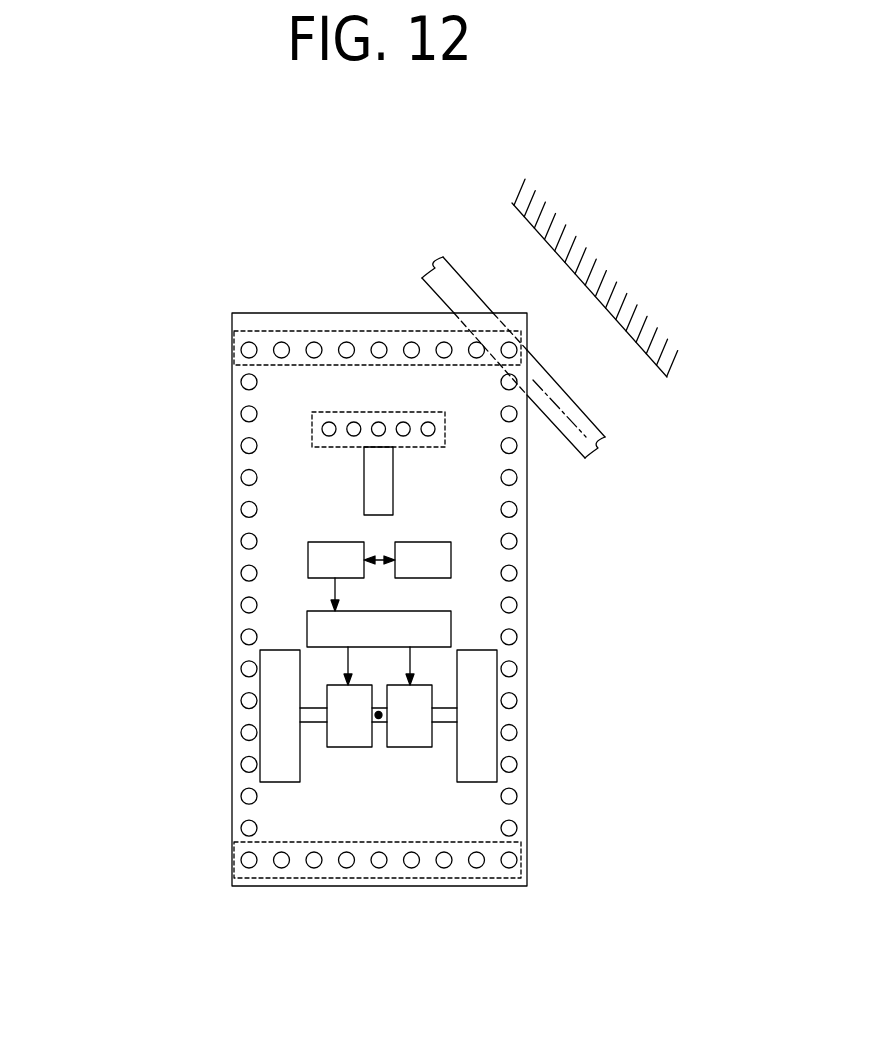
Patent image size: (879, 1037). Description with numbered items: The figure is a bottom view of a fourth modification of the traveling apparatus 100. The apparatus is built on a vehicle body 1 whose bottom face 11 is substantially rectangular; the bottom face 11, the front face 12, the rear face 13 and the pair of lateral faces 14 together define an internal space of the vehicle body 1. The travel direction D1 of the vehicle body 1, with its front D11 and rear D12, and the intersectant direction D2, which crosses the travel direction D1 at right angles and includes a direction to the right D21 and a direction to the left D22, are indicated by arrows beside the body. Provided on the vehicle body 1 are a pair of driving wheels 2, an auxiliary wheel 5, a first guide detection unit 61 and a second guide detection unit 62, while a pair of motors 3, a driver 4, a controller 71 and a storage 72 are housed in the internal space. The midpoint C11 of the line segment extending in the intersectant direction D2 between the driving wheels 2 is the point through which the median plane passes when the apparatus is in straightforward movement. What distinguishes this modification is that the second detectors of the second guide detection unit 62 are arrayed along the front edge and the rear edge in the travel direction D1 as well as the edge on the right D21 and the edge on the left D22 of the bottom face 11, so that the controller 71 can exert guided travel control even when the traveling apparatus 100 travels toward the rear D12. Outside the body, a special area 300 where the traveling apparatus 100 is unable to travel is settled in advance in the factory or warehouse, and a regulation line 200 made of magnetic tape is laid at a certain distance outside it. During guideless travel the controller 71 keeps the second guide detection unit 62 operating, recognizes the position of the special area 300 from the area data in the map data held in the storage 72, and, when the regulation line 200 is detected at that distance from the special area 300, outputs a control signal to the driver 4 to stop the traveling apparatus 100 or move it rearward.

The vehicle body 1 is at (65, 840).
The bottom face 11 is at (332, 818).
The front face 12 is at (238, 312).
The rear face 13 is at (253, 885).
The lateral face 14 is at (231, 838).
The driving wheel 2 is at (260, 715).
The motor 3 is at (338, 747).
The driver 4 is at (307, 617).
The auxiliary wheel 5 is at (364, 495).
The first guide detection unit 61 is at (328, 447).
The second guide detection unit 62 is at (232, 352).
The controller 71 is at (307, 557).
The storage 72 is at (451, 557).
The traveling apparatus 100 is at (582, 883).
The regulation line 200 is at (575, 456).
The special area 300 is at (666, 386).
The midpoint C11 is at (518, 840).
The travel direction D1 is at (772, 590).
The front D11 is at (677, 586).
The rear D12 is at (677, 668).
The intersectant direction D2 is at (500, 150).
The right D21 is at (498, 203).
The left D22 is at (315, 203).